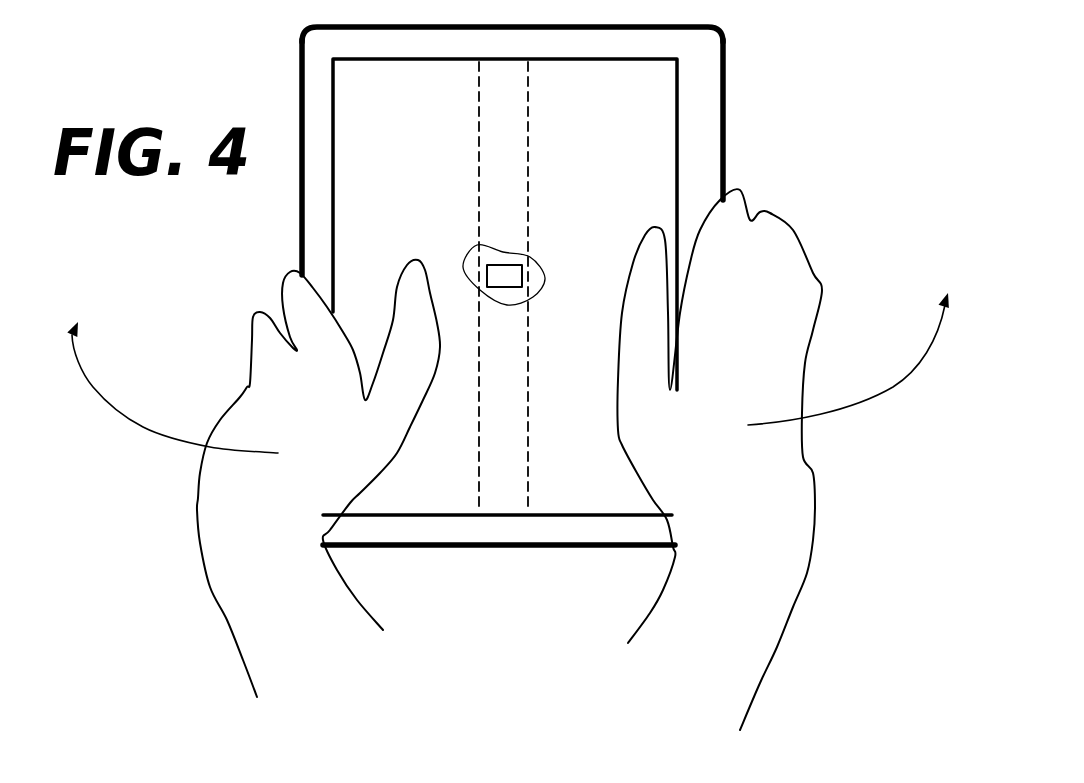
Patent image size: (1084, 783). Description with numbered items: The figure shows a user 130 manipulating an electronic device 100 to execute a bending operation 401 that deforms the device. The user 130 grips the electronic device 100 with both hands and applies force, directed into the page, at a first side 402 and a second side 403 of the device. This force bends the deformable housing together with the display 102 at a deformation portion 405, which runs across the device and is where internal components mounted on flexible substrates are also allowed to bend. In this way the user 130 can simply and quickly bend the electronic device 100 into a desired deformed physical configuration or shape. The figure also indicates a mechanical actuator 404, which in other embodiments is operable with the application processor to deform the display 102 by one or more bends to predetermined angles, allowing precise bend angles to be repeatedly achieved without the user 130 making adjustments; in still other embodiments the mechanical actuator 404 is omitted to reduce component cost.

The electronic device 100 is at (780, 103).
The display 102 is at (548, 500).
The user 130 is at (760, 527).
The bending operation 401 is at (877, 395).
The first side 402 is at (282, 115).
The second side 403 is at (740, 170).
The mechanical actuator 404 is at (503, 262).
The deformation portion 405 is at (480, 163).